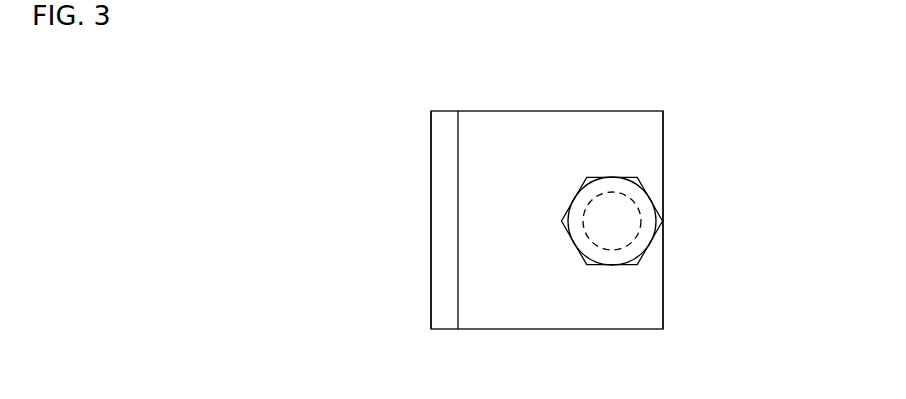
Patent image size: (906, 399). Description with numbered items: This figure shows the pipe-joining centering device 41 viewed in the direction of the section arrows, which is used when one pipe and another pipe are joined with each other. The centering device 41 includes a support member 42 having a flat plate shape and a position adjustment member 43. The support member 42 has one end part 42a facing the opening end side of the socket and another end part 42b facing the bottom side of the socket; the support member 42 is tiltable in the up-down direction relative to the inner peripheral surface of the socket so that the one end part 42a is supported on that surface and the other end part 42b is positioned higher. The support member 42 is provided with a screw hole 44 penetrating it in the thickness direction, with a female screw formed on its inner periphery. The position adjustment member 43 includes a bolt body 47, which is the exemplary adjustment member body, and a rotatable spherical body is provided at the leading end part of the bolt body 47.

The centering device 41 is at (682, 143).
The support member 42 is at (491, 128).
The one end part 42a is at (431, 207).
The other end part 42b is at (663, 306).
The position adjustment member 43 is at (612, 176).
The screw hole 44 is at (645, 235).
The bolt body 47 is at (629, 212).